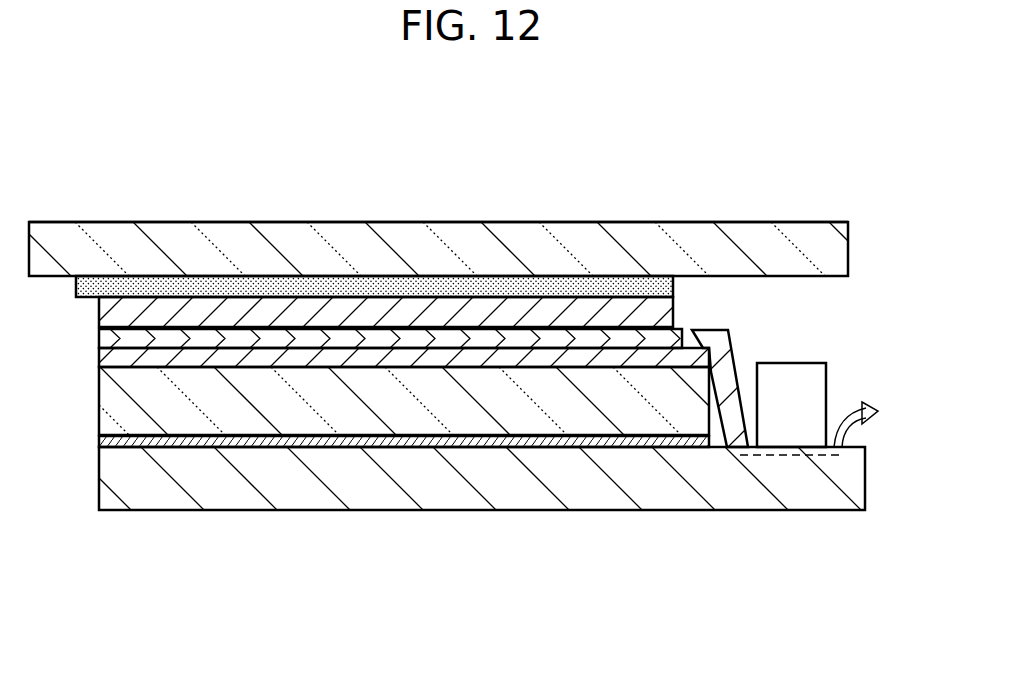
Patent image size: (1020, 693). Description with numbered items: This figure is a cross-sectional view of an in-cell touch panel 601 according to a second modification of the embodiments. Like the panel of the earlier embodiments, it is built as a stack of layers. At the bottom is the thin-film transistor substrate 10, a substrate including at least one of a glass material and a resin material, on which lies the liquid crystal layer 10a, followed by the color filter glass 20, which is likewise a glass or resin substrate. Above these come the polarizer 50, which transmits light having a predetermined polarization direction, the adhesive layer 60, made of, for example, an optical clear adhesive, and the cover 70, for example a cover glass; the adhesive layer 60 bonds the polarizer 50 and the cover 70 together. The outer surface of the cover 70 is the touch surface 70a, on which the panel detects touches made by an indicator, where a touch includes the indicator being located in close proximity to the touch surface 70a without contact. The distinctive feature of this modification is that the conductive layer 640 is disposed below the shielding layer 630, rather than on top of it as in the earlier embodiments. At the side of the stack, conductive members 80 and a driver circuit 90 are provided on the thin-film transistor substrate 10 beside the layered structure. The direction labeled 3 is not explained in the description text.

The in-cell touch panel 601 is at (88, 74).
The cover 70 is at (246, 237).
The touch surface 70a is at (483, 222).
The adhesive layer 60 is at (156, 285).
The polarizer 50 is at (296, 317).
The shielding layer 630 is at (400, 342).
The conductive layer 640 is at (323, 360).
The color filter glass 20 is at (413, 400).
The liquid crystal layer 10a is at (470, 448).
The thin-film transistor substrate 10 is at (578, 465).
The conductive members 80 is at (742, 375).
The driver circuit 90 is at (790, 363).
The external terminal direction 3 is at (856, 410).